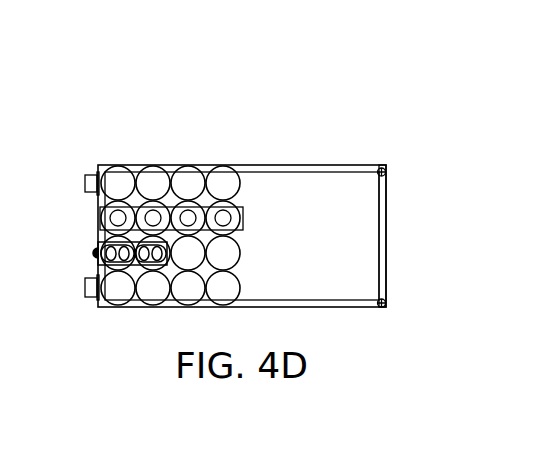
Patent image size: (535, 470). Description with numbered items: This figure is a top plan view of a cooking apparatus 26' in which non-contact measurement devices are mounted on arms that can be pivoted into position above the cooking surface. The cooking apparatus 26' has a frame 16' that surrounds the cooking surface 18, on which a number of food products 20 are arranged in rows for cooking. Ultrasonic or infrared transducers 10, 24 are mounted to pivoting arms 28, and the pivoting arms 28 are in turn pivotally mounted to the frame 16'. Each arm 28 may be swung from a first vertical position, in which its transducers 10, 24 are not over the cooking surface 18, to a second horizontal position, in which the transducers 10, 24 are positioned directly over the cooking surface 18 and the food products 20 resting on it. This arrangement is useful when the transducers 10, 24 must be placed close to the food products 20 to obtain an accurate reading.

The ultrasonic or infrared transducer 10 is at (88, 174).
The ultrasonic or infrared transducer 24 is at (92, 287).
The frame 16' is at (242, 208).
The cooking surface 18 is at (378, 228).
The food product 20 is at (235, 282).
The pivoting arm 28 is at (243, 220).
The cooking apparatus 26' is at (405, 46).